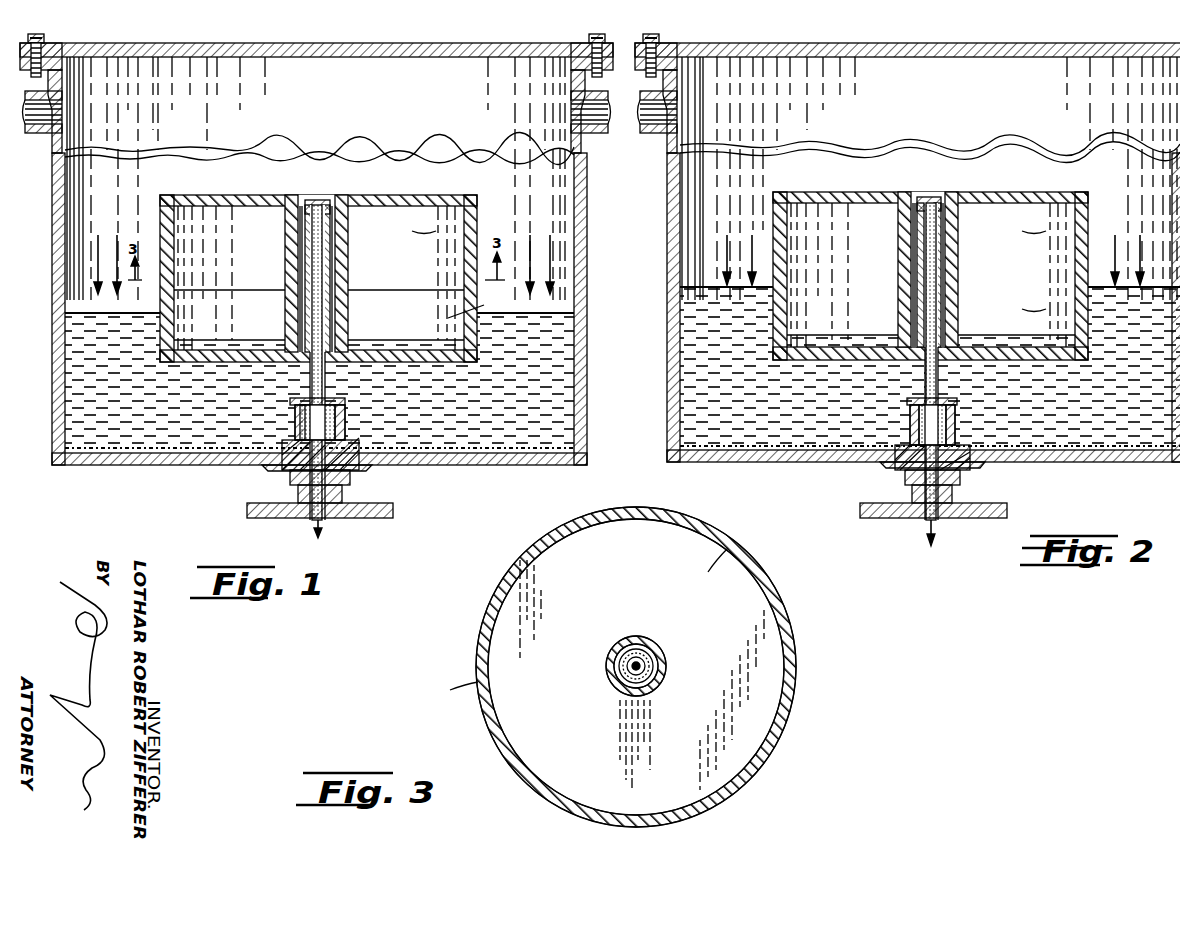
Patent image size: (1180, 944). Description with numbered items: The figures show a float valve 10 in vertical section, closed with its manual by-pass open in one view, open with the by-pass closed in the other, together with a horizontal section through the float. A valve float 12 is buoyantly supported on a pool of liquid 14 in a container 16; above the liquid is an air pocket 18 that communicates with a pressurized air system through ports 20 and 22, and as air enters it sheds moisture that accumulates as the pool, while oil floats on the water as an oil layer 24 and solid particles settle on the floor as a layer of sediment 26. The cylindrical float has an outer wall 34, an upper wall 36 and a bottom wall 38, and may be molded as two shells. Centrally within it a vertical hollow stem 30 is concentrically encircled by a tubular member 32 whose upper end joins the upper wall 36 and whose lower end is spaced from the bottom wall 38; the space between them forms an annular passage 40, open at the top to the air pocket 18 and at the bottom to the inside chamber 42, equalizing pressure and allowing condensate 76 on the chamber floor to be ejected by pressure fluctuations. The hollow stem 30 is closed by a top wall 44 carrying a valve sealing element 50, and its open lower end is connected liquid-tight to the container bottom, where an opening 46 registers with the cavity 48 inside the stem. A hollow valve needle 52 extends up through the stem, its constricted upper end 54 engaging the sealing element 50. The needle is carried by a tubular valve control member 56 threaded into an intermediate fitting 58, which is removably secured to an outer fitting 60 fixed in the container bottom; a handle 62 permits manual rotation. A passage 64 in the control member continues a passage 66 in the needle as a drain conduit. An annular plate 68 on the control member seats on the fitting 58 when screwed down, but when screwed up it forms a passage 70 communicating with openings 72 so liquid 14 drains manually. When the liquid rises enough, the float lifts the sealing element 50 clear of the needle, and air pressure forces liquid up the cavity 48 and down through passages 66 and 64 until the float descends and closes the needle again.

In FIG. 1, the float valve 10 is at (355, 182).
In FIG. 2, the float valve 10 is at (1008, 182).
In FIG. 1, the valve float 12 is at (334, 284).
In FIG. 2, the valve float 12 is at (944, 289).
In FIG. 3, the valve float 12 is at (615, 667).
In FIG. 1, the pool of liquid 14 is at (100, 380).
In FIG. 2, the pool of liquid 14 is at (700, 340).
In FIG. 1, the container 16 is at (587, 418).
In FIG. 2, the container 16 is at (667, 408).
In FIG. 1, the air pocket 18 is at (332, 114).
In FIG. 2, the air pocket 18 is at (994, 114).
In FIG. 1, the port 20 is at (606, 118).
In FIG. 1, the port 22 is at (30, 113).
In FIG. 2, the port 22 is at (652, 112).
In FIG. 1, the oil layer 24 is at (545, 310).
In FIG. 2, the oil layer 24 is at (700, 287).
In FIG. 1, the layer of sediment 26 is at (138, 465).
In FIG. 2, the layer of sediment 26 is at (786, 462).
In FIG. 1, the hollow stem 30 is at (340, 262).
In FIG. 2, the hollow stem 30 is at (942, 236).
In FIG. 3, the hollow stem 30 is at (652, 662).
In FIG. 1, the tubular member 32 is at (322, 237).
In FIG. 2, the tubular member 32 is at (928, 251).
In FIG. 3, the tubular member 32 is at (606, 655).
In FIG. 1, the outer wall 34 is at (477, 228).
In FIG. 2, the outer wall 34 is at (1088, 216).
In FIG. 1, the upper wall 36 is at (247, 186).
In FIG. 2, the upper wall 36 is at (812, 184).
In FIG. 1, the bottom wall 38 is at (455, 362).
In FIG. 2, the bottom wall 38 is at (1060, 360).
In FIG. 1, the annular passage 40 is at (292, 196).
In FIG. 2, the annular passage 40 is at (904, 194).
In FIG. 1, the inside chamber 42 is at (268, 259).
In FIG. 2, the inside chamber 42 is at (870, 280).
In FIG. 1, the top wall 44 is at (312, 206).
In FIG. 2, the top wall 44 is at (926, 197).
In FIG. 1, the opening 46 is at (285, 362).
In FIG. 2, the opening 46 is at (911, 361).
In FIG. 1, the cavity 48 is at (342, 224).
In FIG. 2, the cavity 48 is at (928, 275).
In FIG. 1, the valve sealing element 50 is at (305, 214).
In FIG. 2, the valve sealing element 50 is at (940, 200).
In FIG. 3, the valve sealing element 50 is at (628, 670).
In FIG. 1, the hollow valve needle 52 is at (300, 405).
In FIG. 2, the hollow valve needle 52 is at (950, 364).
In FIG. 3, the hollow valve needle 52 is at (638, 660).
In FIG. 1, the upper end 54 is at (326, 206).
In FIG. 2, the upper end 54 is at (917, 208).
In FIG. 1, the valve control member 56 is at (342, 492).
In FIG. 2, the valve control member 56 is at (912, 490).
In FIG. 1, the intermediate fitting 58 is at (298, 482).
In FIG. 2, the intermediate fitting 58 is at (958, 478).
In FIG. 1, the outer fitting 60 is at (365, 474).
In FIG. 2, the outer fitting 60 is at (985, 466).
In FIG. 1, the handle 62 is at (368, 518).
In FIG. 2, the handle 62 is at (892, 518).
In FIG. 1, the passage 64 is at (310, 518).
In FIG. 2, the passage 64 is at (940, 520).
In FIG. 1, the passage 66 is at (322, 310).
In FIG. 2, the passage 66 is at (916, 300).
In FIG. 1, the annular plate 68 is at (345, 400).
In FIG. 2, the annular plate 68 is at (957, 400).
In FIG. 1, the passage 70 is at (345, 418).
In FIG. 2, the passage 70 is at (932, 425).
In FIG. 1, the openings 72 is at (295, 428).
In FIG. 2, the openings 72 is at (946, 424).
In FIG. 1, the condensate 76 is at (430, 330).
In FIG. 2, the condensate 76 is at (1026, 332).